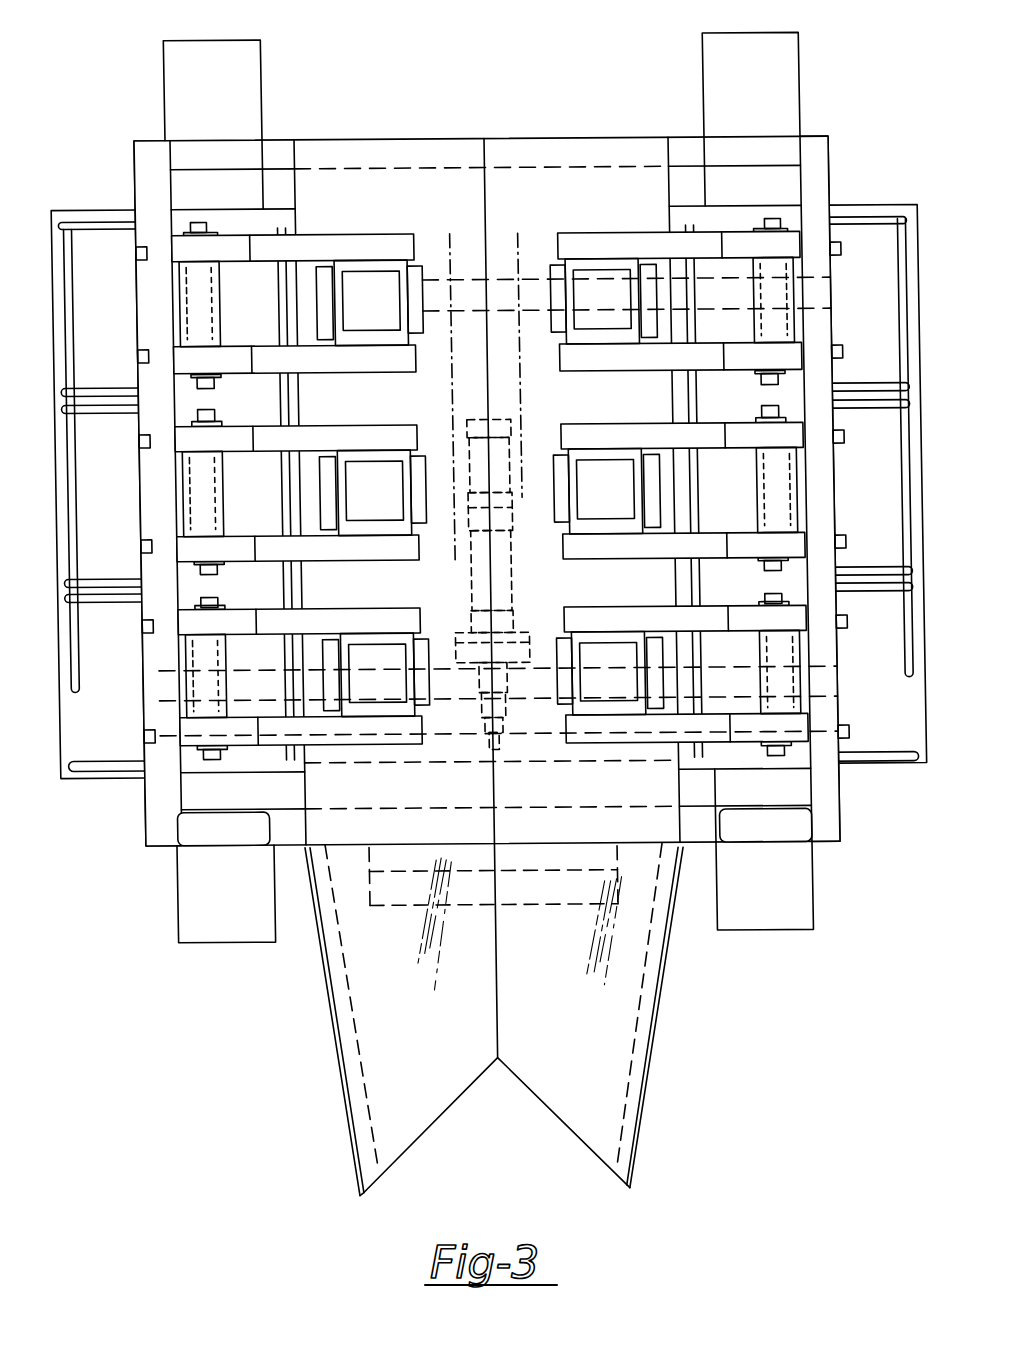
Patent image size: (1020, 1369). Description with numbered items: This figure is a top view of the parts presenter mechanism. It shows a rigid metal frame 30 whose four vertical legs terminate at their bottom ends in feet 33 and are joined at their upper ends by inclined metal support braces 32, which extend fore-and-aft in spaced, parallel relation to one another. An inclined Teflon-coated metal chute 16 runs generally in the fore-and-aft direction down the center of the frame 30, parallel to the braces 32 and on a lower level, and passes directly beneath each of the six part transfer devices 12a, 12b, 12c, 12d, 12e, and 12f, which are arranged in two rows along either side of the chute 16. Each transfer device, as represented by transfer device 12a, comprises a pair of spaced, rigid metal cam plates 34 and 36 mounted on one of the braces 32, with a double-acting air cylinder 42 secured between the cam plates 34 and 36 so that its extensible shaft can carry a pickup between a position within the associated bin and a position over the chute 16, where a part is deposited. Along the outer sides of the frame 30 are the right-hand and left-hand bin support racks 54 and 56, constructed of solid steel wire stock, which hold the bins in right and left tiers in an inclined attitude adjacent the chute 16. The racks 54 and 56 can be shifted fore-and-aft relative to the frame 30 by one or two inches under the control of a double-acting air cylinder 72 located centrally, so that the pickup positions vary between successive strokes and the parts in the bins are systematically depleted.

The part transfer device 12a is at (666, 689).
The part transfer device 12b is at (613, 396).
The part transfer device 12c is at (621, 234).
The part transfer device 12d is at (345, 606).
The part transfer device 12e is at (372, 423).
The part transfer device 12f is at (343, 238).
The chute 16 is at (564, 979).
The frame 30 is at (480, 504).
The support brace 32 is at (144, 803).
The foot 33 is at (254, 93).
The cam plate 34 is at (605, 743).
The cam plate 36 is at (565, 610).
The air cylinder 42 is at (588, 696).
The right-hand bin support rack 54 is at (891, 246).
The left-hand bin support rack 56 is at (74, 678).
The air cylinder 72 is at (471, 585).